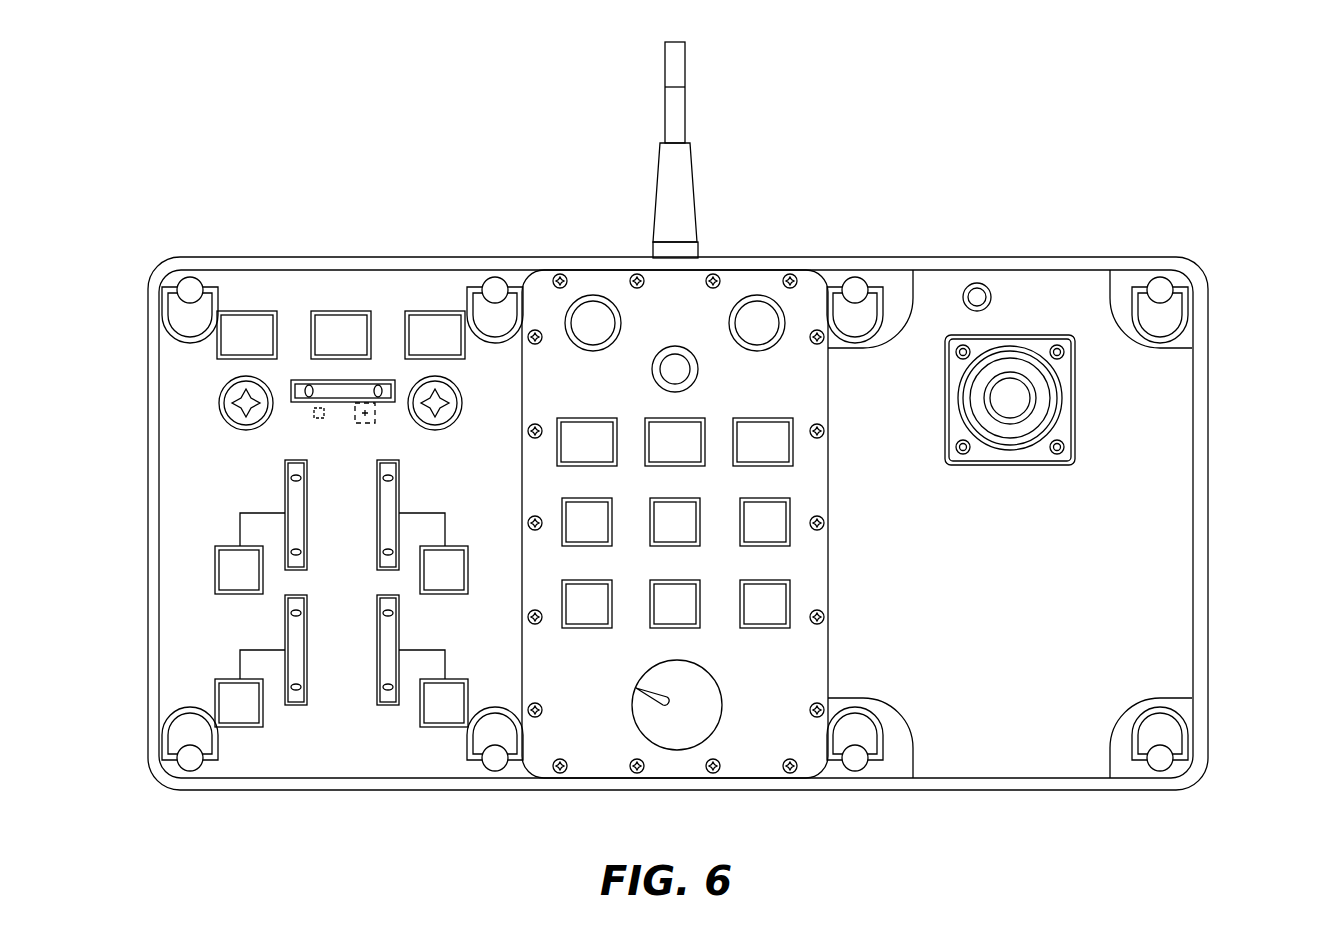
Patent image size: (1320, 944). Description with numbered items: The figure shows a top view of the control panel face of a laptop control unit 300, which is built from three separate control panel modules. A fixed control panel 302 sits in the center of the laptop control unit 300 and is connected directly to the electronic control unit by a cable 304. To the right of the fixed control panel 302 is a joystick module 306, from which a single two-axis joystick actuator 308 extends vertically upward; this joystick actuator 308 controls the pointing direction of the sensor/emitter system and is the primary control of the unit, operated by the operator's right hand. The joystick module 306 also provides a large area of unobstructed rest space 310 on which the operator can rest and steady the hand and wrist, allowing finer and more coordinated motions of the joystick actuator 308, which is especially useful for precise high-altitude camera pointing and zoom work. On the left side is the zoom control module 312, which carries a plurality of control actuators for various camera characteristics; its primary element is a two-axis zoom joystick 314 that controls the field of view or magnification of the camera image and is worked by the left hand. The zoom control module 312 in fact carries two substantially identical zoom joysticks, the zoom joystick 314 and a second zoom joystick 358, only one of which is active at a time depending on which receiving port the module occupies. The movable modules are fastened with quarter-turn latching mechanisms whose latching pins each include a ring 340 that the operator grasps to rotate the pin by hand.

The laptop control unit 300 is at (1106, 146).
The fixed control panel 302 is at (594, 282).
The cable 304 is at (678, 116).
The joystick module 306 is at (1155, 446).
The joystick actuator 308 is at (1037, 412).
The rest space 310 is at (1002, 637).
The zoom control module 312 is at (232, 283).
The zoom joystick 314 is at (228, 398).
The ring 340 is at (1173, 713).
The left zoom joystick 358 is at (433, 395).